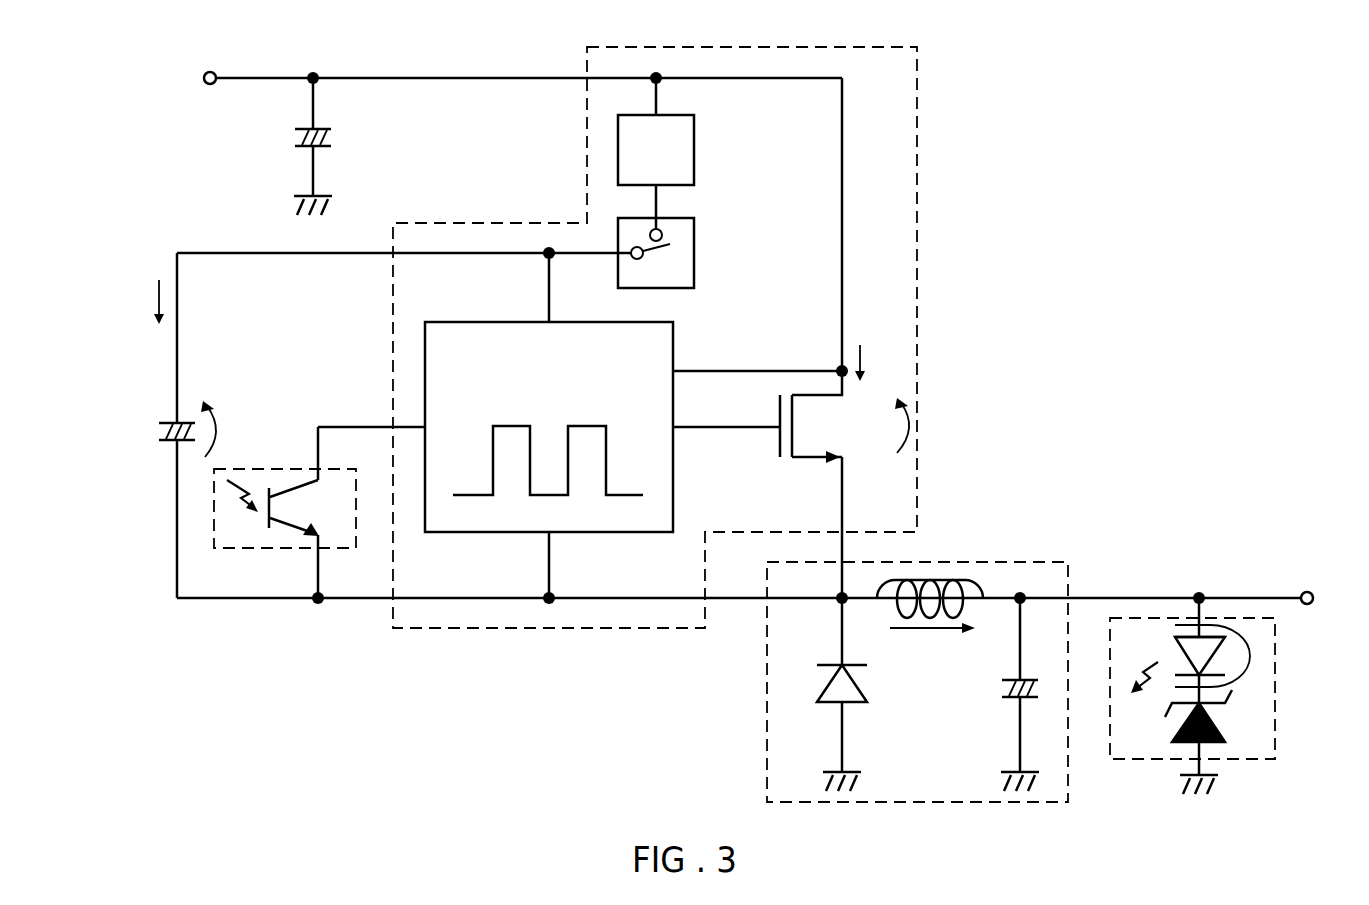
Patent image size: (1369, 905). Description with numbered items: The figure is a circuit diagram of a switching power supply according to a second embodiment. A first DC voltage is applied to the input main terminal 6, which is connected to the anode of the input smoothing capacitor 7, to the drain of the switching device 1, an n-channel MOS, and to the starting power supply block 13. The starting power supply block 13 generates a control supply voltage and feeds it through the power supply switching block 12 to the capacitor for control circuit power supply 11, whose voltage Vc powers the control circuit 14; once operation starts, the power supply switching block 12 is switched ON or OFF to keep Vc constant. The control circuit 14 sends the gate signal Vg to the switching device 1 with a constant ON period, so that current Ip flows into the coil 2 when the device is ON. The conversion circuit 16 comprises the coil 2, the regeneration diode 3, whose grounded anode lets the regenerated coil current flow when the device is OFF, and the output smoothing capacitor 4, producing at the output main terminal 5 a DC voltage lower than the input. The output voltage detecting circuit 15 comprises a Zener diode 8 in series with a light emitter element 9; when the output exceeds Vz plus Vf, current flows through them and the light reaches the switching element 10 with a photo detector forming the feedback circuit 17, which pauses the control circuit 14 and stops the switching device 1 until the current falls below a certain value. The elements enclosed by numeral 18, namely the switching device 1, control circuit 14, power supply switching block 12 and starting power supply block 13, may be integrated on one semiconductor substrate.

The switching device 1 is at (792, 425).
The coil 2 is at (983, 588).
The regeneration diode 3 is at (855, 683).
The output smoothing capacitor 4 is at (1003, 688).
The output main terminal 5 is at (1312, 592).
The input main terminal 6 is at (206, 85).
The input smoothing capacitor 7 is at (333, 138).
The Zener diode 8 is at (1220, 720).
The light emitter element 9 is at (1250, 655).
The switching element with a photo detector 10 is at (275, 503).
The capacitor for control circuit power supply 11 is at (160, 430).
The power supply switching block 12 is at (694, 258).
The starting power supply block 13 is at (694, 148).
The control circuit 14 is at (673, 335).
The output voltage detecting circuit 15 is at (1219, 704).
The conversion circuit 16 is at (957, 654).
The feedback circuit 17 is at (276, 512).
The elements integrated on the same semiconductor substrate 18 is at (917, 118).